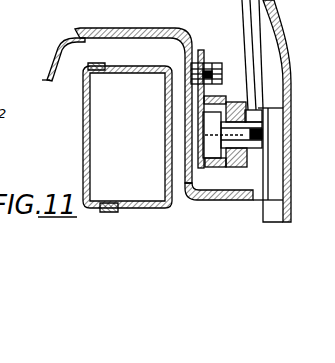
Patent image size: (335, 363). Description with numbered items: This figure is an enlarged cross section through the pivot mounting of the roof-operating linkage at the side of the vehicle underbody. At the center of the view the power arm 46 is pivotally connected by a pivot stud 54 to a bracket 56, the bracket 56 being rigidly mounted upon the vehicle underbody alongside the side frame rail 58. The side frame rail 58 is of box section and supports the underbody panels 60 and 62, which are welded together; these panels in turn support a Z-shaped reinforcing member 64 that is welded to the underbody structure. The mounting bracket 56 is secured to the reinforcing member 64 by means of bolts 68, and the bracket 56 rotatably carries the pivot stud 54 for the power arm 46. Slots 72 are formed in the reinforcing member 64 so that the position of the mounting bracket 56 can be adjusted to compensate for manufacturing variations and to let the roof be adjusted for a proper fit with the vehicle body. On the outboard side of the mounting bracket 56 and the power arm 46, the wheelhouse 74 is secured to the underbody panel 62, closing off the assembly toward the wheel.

The power arm 46 is at (253, 96).
The pivot stud 54 is at (243, 132).
The bracket 56 is at (226, 100).
The side frame rail 58 is at (83, 81).
The underbody panel 60 is at (58, 43).
The underbody panel 62 is at (211, 200).
The Z-shaped reinforcing member 64 is at (125, 28).
The bolts 68 is at (222, 69).
The slots 72 is at (203, 49).
The wheelhouse 74 is at (292, 146).